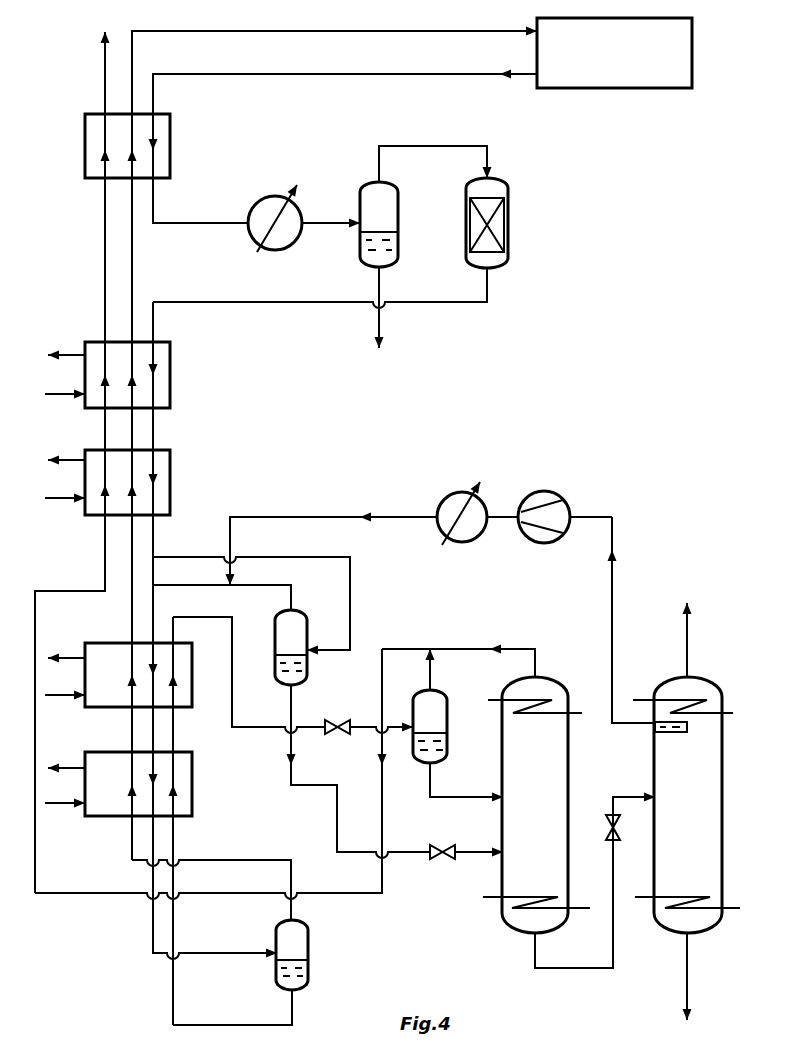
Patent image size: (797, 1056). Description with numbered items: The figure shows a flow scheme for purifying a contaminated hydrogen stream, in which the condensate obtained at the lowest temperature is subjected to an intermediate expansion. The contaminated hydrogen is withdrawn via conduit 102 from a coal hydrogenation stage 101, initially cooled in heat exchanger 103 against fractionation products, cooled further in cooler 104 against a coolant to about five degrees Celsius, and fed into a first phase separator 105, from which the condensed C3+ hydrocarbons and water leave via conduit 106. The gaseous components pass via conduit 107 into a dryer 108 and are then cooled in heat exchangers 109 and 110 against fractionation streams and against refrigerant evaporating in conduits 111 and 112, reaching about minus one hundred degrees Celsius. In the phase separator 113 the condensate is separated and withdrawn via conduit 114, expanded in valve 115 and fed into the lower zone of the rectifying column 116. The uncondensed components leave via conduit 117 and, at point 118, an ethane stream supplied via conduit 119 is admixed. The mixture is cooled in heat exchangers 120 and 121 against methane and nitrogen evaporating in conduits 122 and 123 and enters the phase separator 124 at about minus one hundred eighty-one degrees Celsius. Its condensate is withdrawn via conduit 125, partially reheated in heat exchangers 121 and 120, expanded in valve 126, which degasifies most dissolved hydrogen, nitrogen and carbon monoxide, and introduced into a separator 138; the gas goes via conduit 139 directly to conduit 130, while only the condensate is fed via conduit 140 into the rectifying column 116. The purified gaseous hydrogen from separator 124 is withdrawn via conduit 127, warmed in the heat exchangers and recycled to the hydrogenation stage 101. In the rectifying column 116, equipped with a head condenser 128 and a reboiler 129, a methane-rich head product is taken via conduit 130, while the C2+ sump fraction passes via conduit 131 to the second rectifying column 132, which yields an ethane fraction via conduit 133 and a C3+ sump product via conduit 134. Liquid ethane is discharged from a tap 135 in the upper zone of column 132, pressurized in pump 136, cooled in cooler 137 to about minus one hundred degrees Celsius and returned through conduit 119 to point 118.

The coal hydrogenation stage 101 is at (622, 88).
The conduit 102 is at (313, 74).
The heat exchanger 103 is at (172, 146).
The cooler 104 is at (262, 201).
The first phase separator 105 is at (398, 212).
The conduit 106 is at (376, 284).
The conduit 107 is at (442, 146).
The dryer 108 is at (508, 228).
The heat exchanger 109 is at (170, 373).
The heat exchanger 110 is at (170, 472).
The conduit 111 is at (58, 394).
The conduit 112 is at (58, 498).
The phase separator 113 is at (302, 630).
The conduit 114 is at (296, 723).
The valve 115 is at (437, 859).
The rectifying column 116 is at (568, 776).
The conduit 117 is at (258, 585).
The admixing point 118 is at (228, 590).
The conduit 119 is at (305, 515).
The heat exchanger 120 is at (97, 648).
The heat exchanger 121 is at (192, 786).
The conduit 122 is at (58, 695).
The conduit 123 is at (58, 803).
The phase separator 124 is at (308, 944).
The conduit 125 is at (292, 1012).
The valve 126 is at (337, 738).
The conduit 127 is at (234, 858).
The head condenser 128 is at (575, 708).
The reboiler 129 is at (583, 910).
The conduit 130 is at (517, 648).
The conduit 131 is at (578, 970).
The rectifying column 132 is at (720, 832).
The conduit 133 is at (687, 650).
The conduit 134 is at (687, 970).
The tap 135 is at (652, 730).
The pump 136 is at (545, 492).
The cooler 137 is at (453, 492).
The separator 138 is at (447, 713).
The conduit 139 is at (436, 675).
The conduit 140 is at (466, 796).